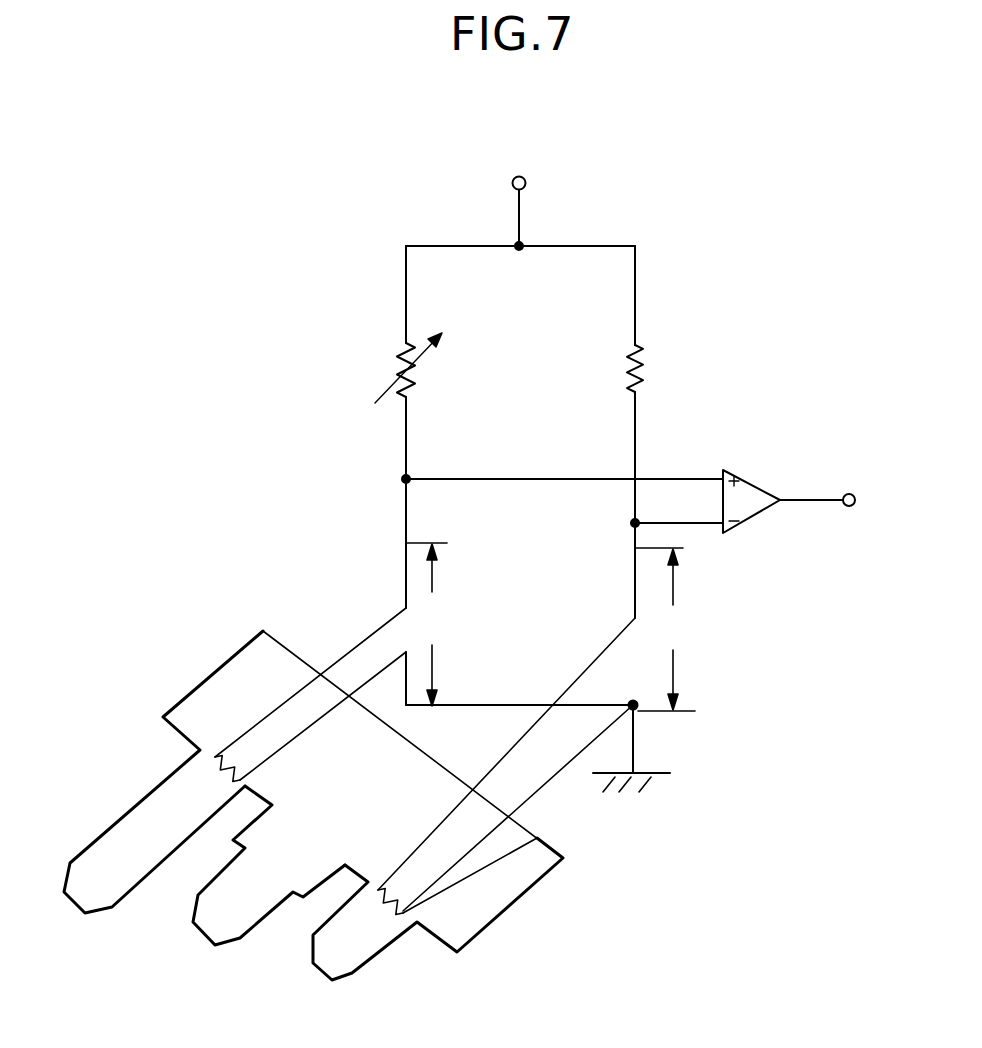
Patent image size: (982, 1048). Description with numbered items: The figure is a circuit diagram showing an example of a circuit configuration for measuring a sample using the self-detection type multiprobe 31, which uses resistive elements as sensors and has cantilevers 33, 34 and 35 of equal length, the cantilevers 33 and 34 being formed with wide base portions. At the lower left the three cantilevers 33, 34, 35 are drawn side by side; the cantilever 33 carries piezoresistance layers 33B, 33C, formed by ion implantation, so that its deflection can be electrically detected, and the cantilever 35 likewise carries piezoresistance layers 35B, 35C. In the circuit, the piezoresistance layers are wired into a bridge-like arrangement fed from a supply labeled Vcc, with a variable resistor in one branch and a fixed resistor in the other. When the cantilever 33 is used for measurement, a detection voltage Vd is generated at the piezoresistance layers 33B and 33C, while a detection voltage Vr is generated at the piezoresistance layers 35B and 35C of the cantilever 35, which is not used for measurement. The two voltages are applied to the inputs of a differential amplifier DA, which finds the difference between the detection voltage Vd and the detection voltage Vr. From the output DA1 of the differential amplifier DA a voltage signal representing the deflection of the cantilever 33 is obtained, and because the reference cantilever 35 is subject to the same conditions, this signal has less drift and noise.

The multiprobe 31 is at (181, 662).
The cantilever 33 is at (100, 843).
The piezoresistance layer 33B is at (227, 770).
The piezoresistance layer 33C is at (256, 717).
The cantilever 34 is at (205, 930).
The cantilever 35 is at (325, 965).
The piezoresistance layer 35B is at (393, 903).
The piezoresistance layer 35C is at (505, 861).
The differential amplifier DA is at (748, 477).
The output DA1 is at (848, 494).
The supply voltage Vcc is at (525, 196).
The detection voltage Vd is at (430, 624).
The detection voltage Vr is at (665, 629).